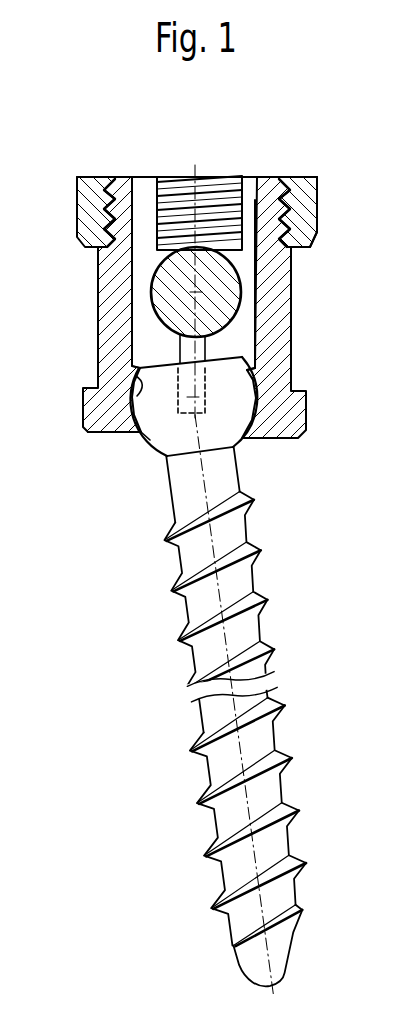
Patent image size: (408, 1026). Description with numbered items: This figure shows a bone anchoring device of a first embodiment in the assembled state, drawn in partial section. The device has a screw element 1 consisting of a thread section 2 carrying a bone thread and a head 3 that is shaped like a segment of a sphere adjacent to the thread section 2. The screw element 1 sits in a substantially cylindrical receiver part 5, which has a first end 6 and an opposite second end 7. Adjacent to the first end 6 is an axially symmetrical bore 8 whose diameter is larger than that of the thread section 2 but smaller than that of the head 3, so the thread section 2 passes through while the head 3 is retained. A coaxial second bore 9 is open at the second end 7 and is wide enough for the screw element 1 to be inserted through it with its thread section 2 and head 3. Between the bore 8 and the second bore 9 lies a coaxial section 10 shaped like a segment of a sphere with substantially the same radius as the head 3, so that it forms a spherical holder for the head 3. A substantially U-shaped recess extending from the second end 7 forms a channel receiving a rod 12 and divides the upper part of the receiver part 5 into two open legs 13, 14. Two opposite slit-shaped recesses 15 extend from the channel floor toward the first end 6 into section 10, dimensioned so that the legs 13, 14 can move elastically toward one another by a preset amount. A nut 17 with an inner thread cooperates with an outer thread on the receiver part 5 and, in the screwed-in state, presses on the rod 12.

The screw element 1 is at (229, 650).
The thread section 2 is at (200, 612).
The head 3 is at (220, 423).
The receiver part 5 is at (92, 329).
The first end 6 is at (106, 436).
The second end 7 is at (130, 176).
The bore 8 is at (153, 440).
The second bore 9 is at (248, 272).
The coaxial section 10 is at (134, 378).
The rod 12 is at (160, 284).
The open leg 13 is at (110, 217).
The open leg 14 is at (272, 219).
The slit-shaped recesses 15 is at (206, 347).
The nut 17 is at (309, 190).